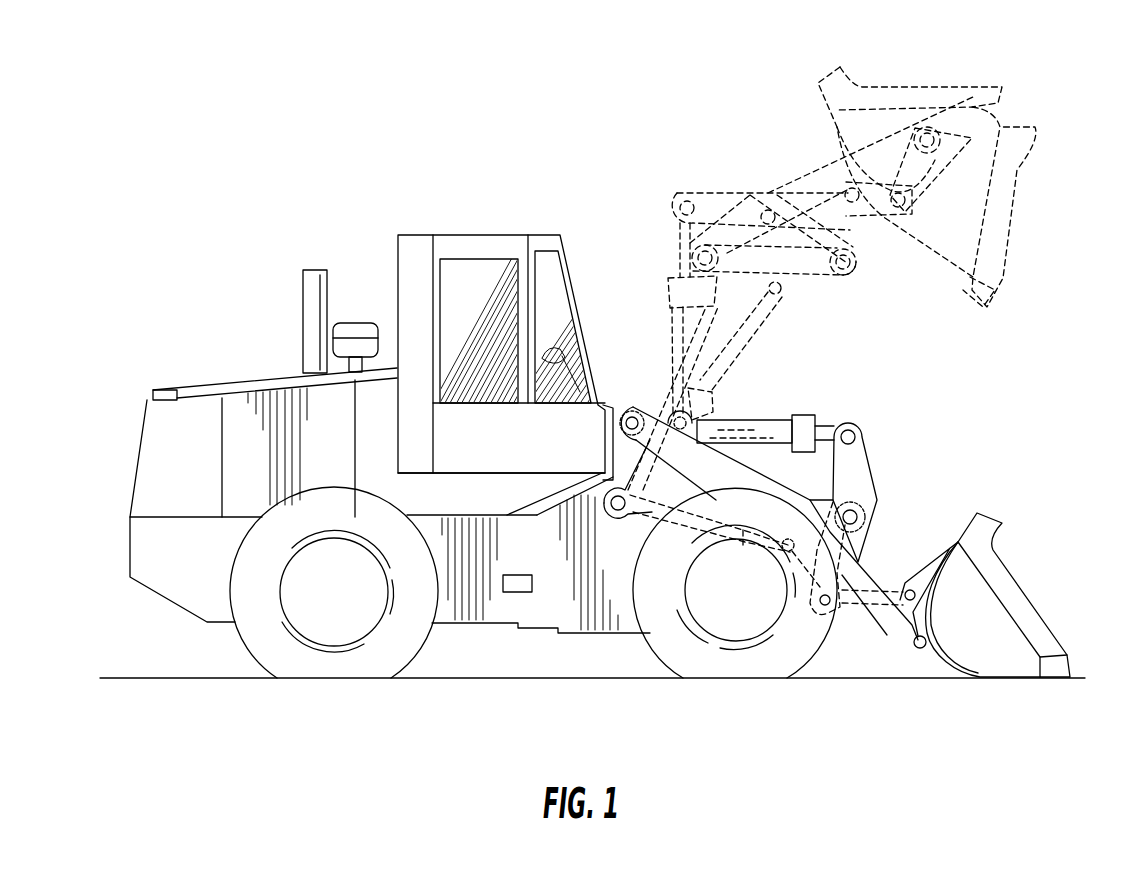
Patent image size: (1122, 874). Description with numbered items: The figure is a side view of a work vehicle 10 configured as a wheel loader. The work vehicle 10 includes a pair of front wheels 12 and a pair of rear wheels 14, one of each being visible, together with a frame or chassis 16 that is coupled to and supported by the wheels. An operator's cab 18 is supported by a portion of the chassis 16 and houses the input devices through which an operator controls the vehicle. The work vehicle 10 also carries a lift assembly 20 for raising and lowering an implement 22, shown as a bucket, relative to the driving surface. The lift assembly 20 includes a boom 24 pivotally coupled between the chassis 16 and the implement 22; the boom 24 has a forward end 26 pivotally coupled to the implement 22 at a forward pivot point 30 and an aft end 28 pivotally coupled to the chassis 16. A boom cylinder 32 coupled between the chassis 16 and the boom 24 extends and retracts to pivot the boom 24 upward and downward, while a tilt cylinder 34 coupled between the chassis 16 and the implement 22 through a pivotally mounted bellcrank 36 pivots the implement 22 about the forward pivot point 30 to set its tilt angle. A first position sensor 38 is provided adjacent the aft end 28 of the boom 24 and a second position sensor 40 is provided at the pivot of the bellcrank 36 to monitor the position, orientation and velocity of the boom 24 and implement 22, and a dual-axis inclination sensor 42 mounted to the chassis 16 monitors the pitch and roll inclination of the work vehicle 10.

The work vehicle 10 is at (592, 398).
The front wheels 12 is at (750, 616).
The rear wheels 14 is at (286, 602).
The chassis 16 is at (390, 510).
The operator's cab 18 is at (531, 344).
The lift assembly 20 is at (832, 278).
The implement 22 is at (1007, 595).
The boom 24 is at (866, 558).
The forward end 26 is at (897, 606).
The aft end 28 is at (621, 383).
The forward pivot point 30 is at (936, 678).
The boom cylinder 32 is at (741, 570).
The tilt cylinder 34 is at (751, 403).
The bellcrank 36 is at (889, 486).
The first position sensor 38 is at (576, 442).
The second position sensor 40 is at (895, 500).
The inclination sensor 42 is at (513, 626).